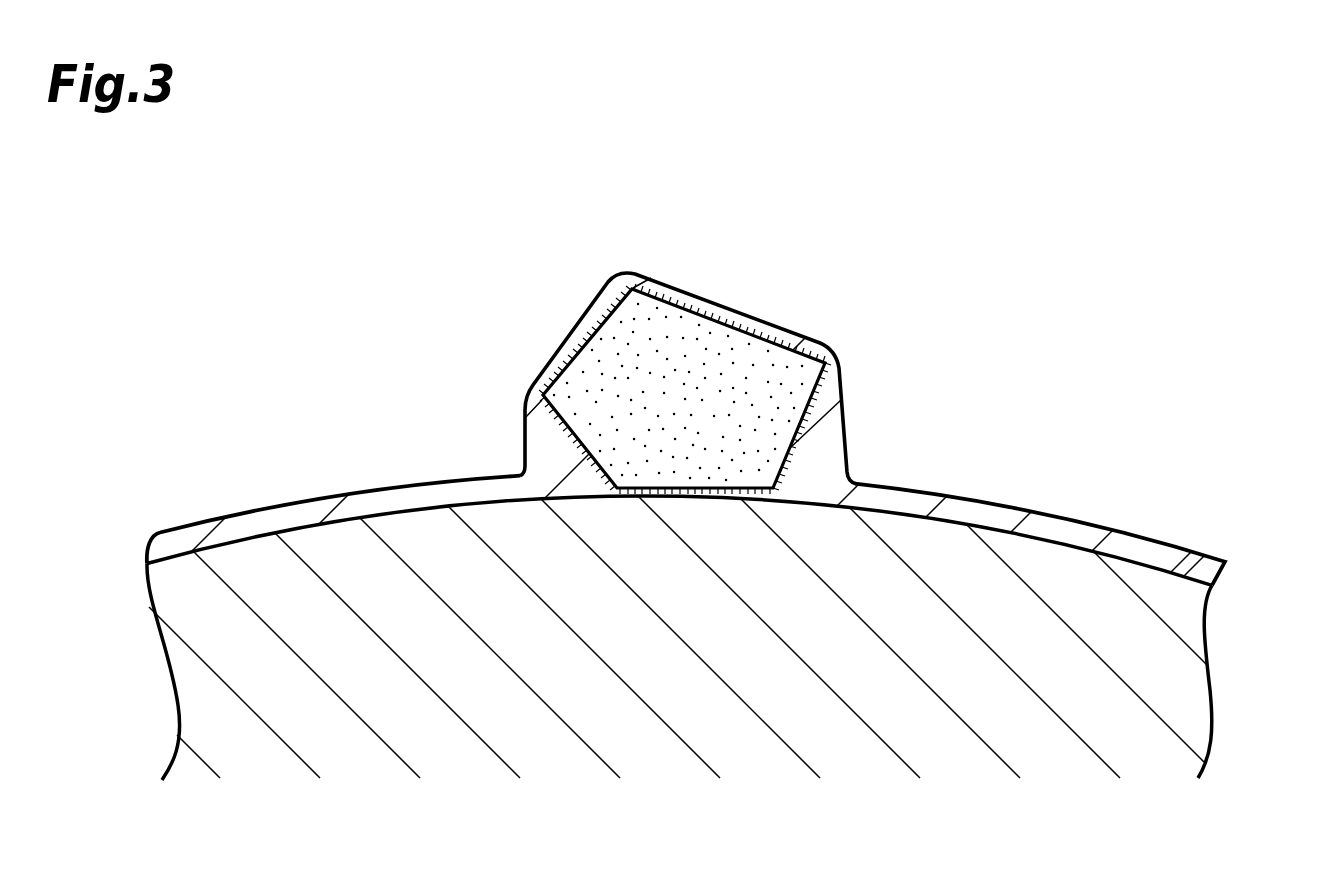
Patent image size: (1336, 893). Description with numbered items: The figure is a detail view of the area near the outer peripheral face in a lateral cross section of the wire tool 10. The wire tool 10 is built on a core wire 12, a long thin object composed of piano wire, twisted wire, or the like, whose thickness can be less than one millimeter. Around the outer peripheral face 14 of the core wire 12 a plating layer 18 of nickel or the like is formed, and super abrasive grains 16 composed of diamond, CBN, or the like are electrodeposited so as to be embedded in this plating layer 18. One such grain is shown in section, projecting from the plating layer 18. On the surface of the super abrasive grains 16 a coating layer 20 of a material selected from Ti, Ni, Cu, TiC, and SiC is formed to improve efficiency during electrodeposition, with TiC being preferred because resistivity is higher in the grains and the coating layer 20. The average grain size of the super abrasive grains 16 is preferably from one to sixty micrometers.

The wire tool 10 is at (1061, 177).
The core wire 12 is at (1197, 674).
The outer peripheral face 14 is at (1218, 558).
The super abrasive grains 16 is at (718, 352).
The plating layer 18 is at (1055, 526).
The coating layer 20 is at (650, 294).